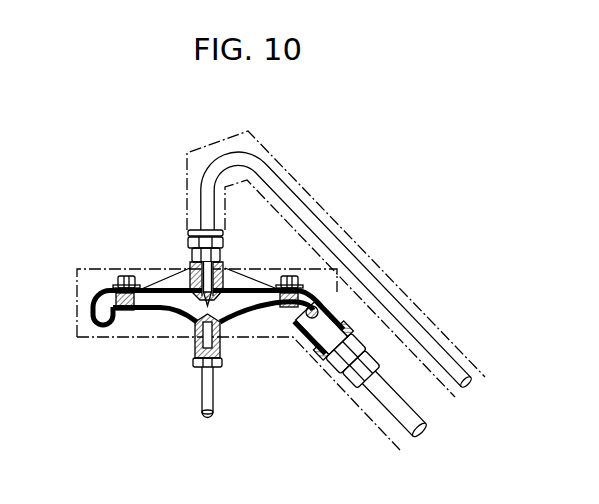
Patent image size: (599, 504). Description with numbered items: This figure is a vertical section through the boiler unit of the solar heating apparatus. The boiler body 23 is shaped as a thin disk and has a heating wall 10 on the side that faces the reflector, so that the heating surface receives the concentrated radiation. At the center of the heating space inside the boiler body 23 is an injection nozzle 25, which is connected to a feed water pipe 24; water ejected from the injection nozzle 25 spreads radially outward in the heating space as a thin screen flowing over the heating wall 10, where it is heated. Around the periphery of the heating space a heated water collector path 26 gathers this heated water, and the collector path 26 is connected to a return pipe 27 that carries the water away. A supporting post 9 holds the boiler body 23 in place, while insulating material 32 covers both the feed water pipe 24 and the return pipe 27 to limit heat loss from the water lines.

The supporting post 9 is at (202, 382).
The heating wall 10 is at (155, 309).
The boiler body 23 is at (152, 288).
The feed water pipe 24 is at (298, 198).
The injection nozzle 25 is at (214, 314).
The heated water collector path 26 is at (98, 328).
The return pipe 27 is at (393, 420).
The insulating material 32 is at (418, 306).